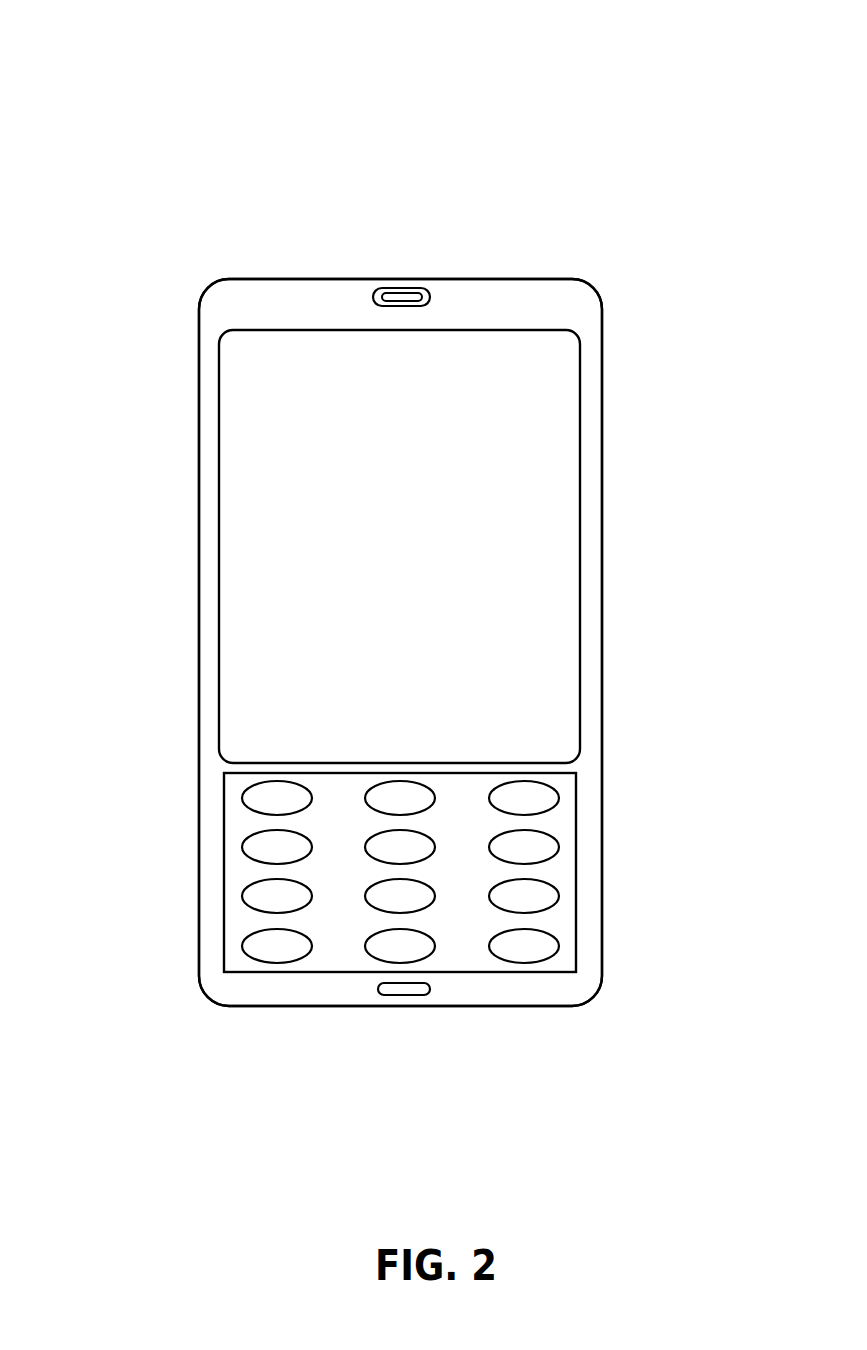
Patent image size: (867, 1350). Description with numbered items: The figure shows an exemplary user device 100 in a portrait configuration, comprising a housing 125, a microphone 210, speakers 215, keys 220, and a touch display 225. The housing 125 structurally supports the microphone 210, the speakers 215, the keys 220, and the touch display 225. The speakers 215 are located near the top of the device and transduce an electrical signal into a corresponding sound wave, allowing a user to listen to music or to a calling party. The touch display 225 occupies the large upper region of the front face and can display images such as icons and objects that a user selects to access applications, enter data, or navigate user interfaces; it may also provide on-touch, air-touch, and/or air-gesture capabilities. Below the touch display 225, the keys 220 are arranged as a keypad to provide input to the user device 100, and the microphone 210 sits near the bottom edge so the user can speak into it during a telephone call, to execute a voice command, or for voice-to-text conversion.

The user device 100 is at (222, 50).
The housing 125 is at (200, 585).
The speakers 215 is at (412, 290).
The touch display 225 is at (565, 530).
The keys 220 is at (613, 963).
The microphone 210 is at (418, 995).